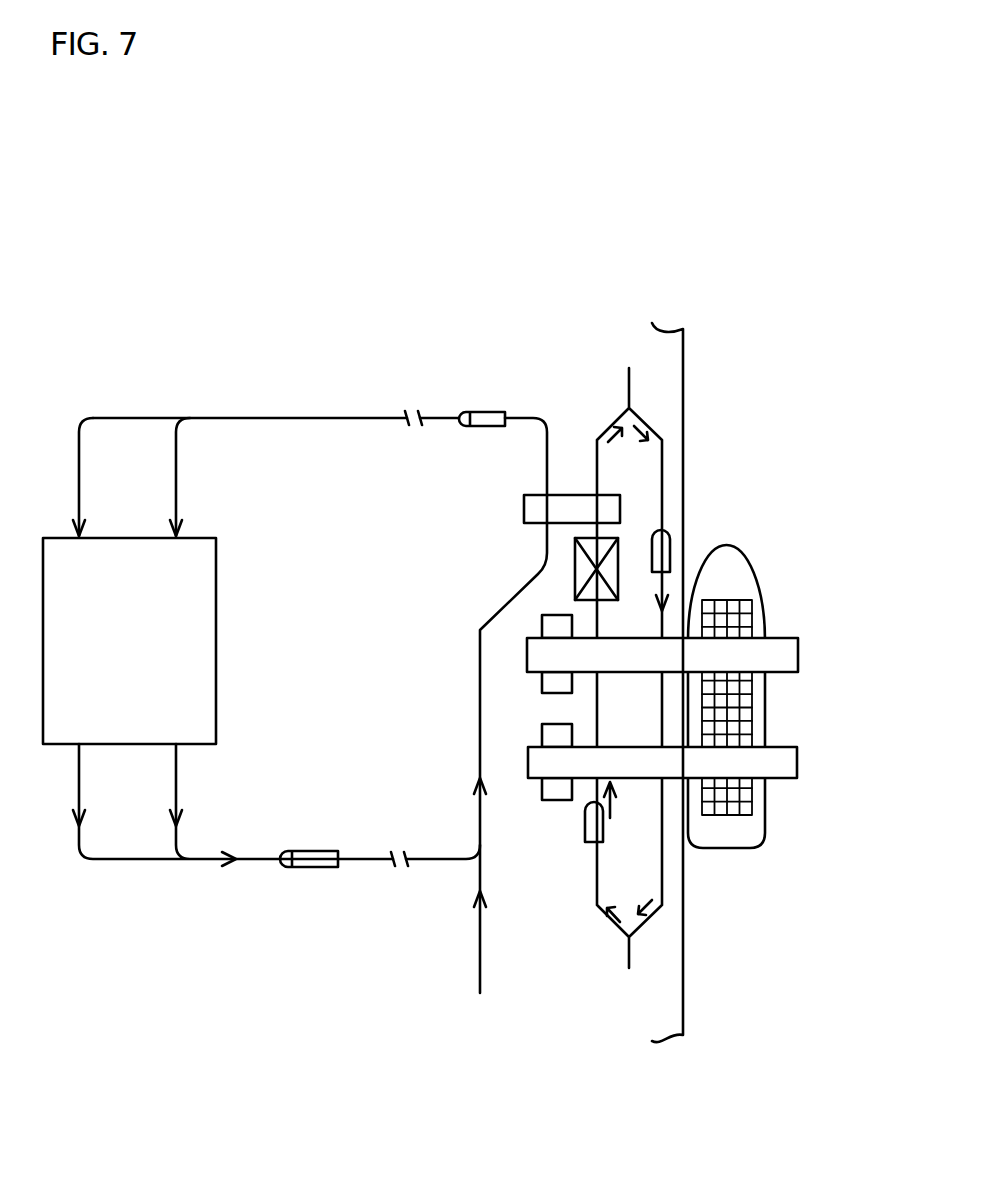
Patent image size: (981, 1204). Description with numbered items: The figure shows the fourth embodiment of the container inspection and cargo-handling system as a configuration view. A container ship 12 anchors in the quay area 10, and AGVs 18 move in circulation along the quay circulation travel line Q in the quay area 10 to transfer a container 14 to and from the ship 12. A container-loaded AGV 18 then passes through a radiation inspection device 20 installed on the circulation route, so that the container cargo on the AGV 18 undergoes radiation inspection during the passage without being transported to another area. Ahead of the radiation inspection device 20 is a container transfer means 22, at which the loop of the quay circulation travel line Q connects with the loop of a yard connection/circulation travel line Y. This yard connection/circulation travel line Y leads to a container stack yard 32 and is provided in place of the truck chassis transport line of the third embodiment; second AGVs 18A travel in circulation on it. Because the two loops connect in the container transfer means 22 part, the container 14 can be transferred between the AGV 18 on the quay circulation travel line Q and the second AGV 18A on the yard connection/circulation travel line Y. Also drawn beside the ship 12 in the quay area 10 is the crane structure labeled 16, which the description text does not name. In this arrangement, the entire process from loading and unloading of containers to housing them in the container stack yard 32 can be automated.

The quay area 10 is at (660, 982).
The container ship 12 is at (745, 552).
The container 14 is at (762, 605).
The quay crane 16 is at (790, 660).
The AGV 18 is at (665, 538).
The second AGV 18A is at (505, 410).
The radiation inspection device 20 is at (575, 568).
The container transfer means 22 is at (524, 505).
The container stack yard 32 is at (216, 678).
The yard connection/circulation travel line Y is at (280, 418).
The quay circulation travel line Q is at (590, 903).